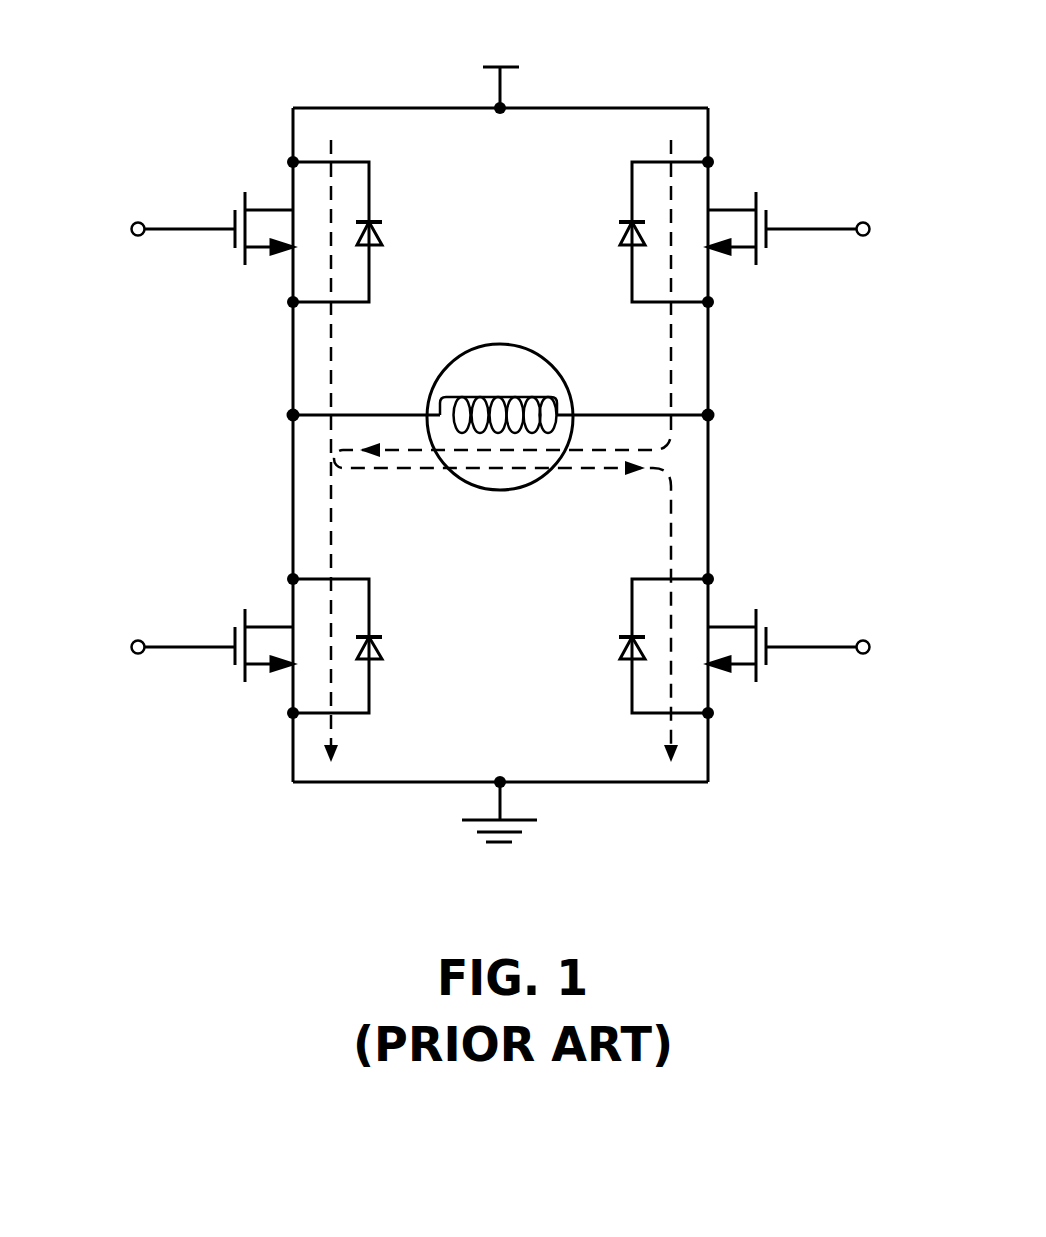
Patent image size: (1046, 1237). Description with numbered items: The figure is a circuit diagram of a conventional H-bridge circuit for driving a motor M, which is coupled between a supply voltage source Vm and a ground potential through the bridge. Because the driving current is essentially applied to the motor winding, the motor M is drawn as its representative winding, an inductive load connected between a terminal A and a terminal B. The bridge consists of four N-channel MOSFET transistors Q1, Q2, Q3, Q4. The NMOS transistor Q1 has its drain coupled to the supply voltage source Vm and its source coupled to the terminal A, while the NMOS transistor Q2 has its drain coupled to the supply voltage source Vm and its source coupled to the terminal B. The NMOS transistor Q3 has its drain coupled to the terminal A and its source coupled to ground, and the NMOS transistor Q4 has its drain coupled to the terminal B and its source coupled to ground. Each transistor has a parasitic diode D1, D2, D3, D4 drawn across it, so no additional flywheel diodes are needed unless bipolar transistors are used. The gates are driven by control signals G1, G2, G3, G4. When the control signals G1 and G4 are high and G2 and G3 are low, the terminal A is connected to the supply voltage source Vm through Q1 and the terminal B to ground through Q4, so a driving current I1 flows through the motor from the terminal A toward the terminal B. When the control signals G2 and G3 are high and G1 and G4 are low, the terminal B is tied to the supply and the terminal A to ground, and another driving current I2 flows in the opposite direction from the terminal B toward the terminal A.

The supply voltage source Vm is at (505, 61).
The NMOS transistor Q1 is at (238, 193).
The NMOS transistor Q2 is at (764, 195).
The NMOS transistor Q3 is at (238, 609).
The NMOS transistor Q4 is at (764, 612).
The parasitic diode D1 is at (392, 233).
The parasitic diode D2 is at (611, 233).
The parasitic diode D3 is at (392, 649).
The parasitic diode D4 is at (611, 649).
The control signal G1 is at (157, 229).
The control signal G2 is at (848, 230).
The control signal G3 is at (157, 647).
The control signal G4 is at (848, 647).
The motor M is at (515, 344).
The terminal A is at (274, 401).
The terminal B is at (730, 402).
The driving current I1 is at (346, 371).
The driving current I2 is at (654, 371).